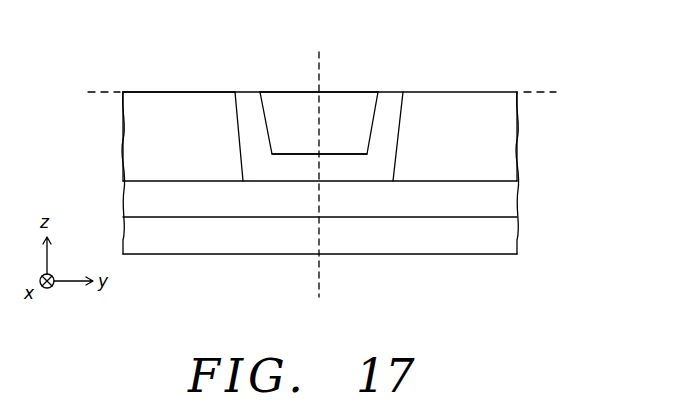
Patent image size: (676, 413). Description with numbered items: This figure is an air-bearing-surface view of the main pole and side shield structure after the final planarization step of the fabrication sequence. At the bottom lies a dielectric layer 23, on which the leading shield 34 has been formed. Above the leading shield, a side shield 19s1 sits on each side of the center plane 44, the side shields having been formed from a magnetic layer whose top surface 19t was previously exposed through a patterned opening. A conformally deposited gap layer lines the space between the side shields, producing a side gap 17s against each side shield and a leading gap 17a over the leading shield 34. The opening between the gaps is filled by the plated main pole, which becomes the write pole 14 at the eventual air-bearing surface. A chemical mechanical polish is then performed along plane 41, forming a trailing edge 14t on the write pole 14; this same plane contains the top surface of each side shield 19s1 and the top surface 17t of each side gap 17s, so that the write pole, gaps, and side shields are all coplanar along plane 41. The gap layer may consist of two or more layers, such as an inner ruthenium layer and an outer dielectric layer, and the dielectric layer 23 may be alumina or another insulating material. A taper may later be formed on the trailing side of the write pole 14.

The write pole 14 is at (352, 100).
The trailing edge 14t is at (281, 91).
The top surface of side gap 17t is at (245, 92).
The side gap 17s is at (393, 100).
The leading gap 17a is at (351, 163).
The top surface of side shield 19t is at (160, 92).
The side shield 19s1 is at (134, 135).
The dielectric layer 23 is at (500, 232).
The leading shield 34 is at (500, 195).
The plane 41 is at (319, 92).
The center plane 44 is at (319, 173).